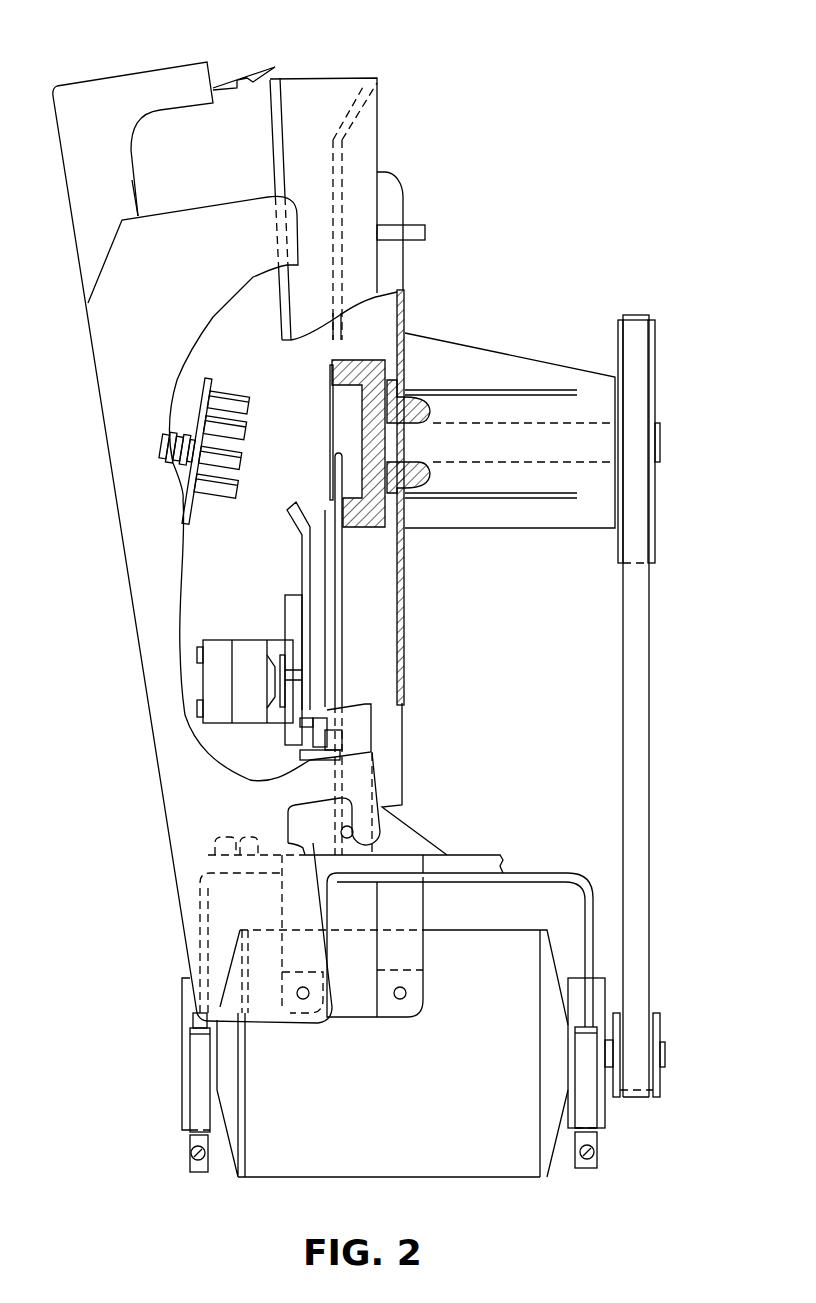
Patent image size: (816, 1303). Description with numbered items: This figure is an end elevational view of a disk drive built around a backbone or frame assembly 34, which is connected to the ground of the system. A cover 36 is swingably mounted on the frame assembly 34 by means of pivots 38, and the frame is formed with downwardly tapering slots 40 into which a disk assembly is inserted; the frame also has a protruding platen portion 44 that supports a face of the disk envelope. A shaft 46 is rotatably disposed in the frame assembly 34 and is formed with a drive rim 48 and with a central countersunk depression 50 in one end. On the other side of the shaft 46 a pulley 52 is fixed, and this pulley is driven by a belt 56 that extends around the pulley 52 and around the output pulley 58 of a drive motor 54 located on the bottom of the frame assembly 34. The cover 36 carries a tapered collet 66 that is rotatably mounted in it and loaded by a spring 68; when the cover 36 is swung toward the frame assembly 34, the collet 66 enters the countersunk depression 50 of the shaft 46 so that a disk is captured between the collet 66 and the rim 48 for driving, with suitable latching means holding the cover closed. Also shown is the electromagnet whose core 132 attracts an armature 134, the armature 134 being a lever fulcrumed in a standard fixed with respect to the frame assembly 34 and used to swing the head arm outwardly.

The cover 36 is at (125, 62).
The downwardly tapering slots 40 is at (322, 100).
The frame assembly 34 is at (414, 190).
The shaft 46 is at (418, 453).
The drive rim 48 is at (332, 376).
The countersunk depression 50 is at (340, 434).
The platen portion 44 is at (325, 515).
The tapered collet 66 is at (230, 390).
The spring 68 is at (184, 440).
The armature 134 is at (283, 650).
The core 132 is at (268, 710).
The pulley 52 is at (618, 557).
The belt 56 is at (623, 678).
The output pulley 58 is at (657, 1078).
The drive motor 54 is at (405, 1120).
The pivots 38 is at (303, 1000).